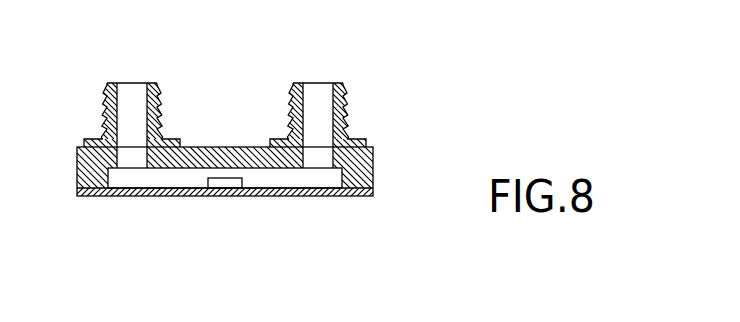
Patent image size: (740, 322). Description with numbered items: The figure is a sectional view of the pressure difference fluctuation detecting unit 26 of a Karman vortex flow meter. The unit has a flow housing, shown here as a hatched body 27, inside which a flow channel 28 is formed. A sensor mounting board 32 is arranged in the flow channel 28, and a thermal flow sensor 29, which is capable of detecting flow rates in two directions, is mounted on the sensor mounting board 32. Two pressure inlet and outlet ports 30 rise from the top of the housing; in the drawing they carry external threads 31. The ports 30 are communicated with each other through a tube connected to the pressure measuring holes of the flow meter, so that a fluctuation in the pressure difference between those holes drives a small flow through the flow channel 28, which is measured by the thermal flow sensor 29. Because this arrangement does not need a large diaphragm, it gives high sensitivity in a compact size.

The pressure difference fluctuation detecting unit 26 is at (248, 122).
The base body 27 is at (373, 160).
The flow channel 28 is at (153, 180).
The thermal flow sensor 29 is at (225, 188).
The pressure inlet and outlet ports 30 is at (128, 95).
The threads 31 is at (153, 97).
The sensor mounting board 32 is at (273, 197).